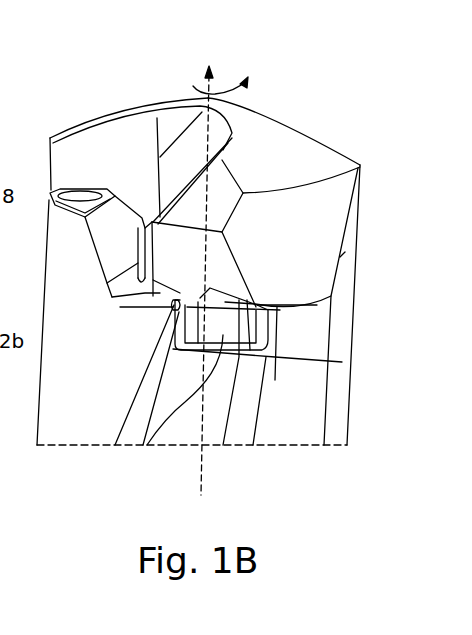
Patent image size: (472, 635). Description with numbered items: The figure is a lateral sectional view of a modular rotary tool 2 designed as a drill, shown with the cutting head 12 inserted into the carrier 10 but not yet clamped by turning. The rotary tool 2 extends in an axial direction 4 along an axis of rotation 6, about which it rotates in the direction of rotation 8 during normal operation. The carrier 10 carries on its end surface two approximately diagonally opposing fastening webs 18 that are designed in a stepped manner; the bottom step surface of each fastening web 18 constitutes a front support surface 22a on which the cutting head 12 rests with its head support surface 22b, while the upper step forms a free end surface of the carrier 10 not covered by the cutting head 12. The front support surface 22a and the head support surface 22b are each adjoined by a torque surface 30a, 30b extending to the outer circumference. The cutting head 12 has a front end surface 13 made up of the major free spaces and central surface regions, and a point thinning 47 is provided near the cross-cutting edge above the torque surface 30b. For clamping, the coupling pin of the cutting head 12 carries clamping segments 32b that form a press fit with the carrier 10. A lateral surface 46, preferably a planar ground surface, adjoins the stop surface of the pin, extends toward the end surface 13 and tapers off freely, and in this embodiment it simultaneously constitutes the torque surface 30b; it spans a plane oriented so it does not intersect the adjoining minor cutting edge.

The rotary tool 2 is at (329, 72).
The axial direction 4 is at (175, 126).
The axis of rotation 6 is at (193, 86).
The direction of rotation 8 is at (243, 93).
The carrier 10 is at (72, 440).
The cutting head 12 is at (315, 204).
The front end surface 13 is at (283, 153).
The fastening web 18 is at (56, 222).
The front support surface 22a is at (153, 308).
The head support surface 22b is at (268, 310).
The torque surface 30a is at (113, 212).
The torque surface 30b is at (228, 305).
The clamping segment 32b is at (157, 432).
The lateral surface 46 is at (286, 403).
The point thinning 47 is at (173, 128).